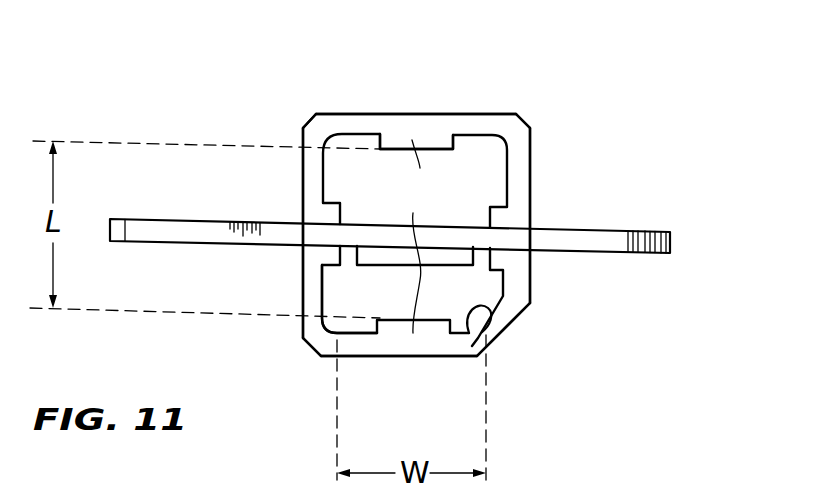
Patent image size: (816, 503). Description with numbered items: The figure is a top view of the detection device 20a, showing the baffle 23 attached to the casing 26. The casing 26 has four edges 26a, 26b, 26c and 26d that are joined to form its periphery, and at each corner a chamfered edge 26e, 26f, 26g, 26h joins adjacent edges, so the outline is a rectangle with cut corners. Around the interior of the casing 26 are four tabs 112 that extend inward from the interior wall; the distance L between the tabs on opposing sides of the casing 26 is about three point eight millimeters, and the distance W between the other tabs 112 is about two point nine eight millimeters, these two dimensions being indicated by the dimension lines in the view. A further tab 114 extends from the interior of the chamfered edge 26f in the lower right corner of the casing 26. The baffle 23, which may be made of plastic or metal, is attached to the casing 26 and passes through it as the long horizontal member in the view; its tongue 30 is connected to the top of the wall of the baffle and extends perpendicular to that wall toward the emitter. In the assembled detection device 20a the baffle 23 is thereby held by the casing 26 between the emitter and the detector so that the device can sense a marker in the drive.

The detection device 20a is at (207, 62).
The baffle 23 is at (577, 237).
The casing 26 is at (416, 235).
The edge 26a is at (347, 120).
The edge 26b is at (312, 185).
The edge 26c is at (518, 167).
The edge 26d is at (410, 357).
The chamfered edge 26e is at (517, 127).
The chamfered edge 26f is at (500, 323).
The chamfered edge 26g is at (315, 345).
The chamfered edge 26h is at (317, 115).
The tongue 30 is at (405, 278).
The tabs 112 is at (490, 217).
The tab 114 is at (475, 338).